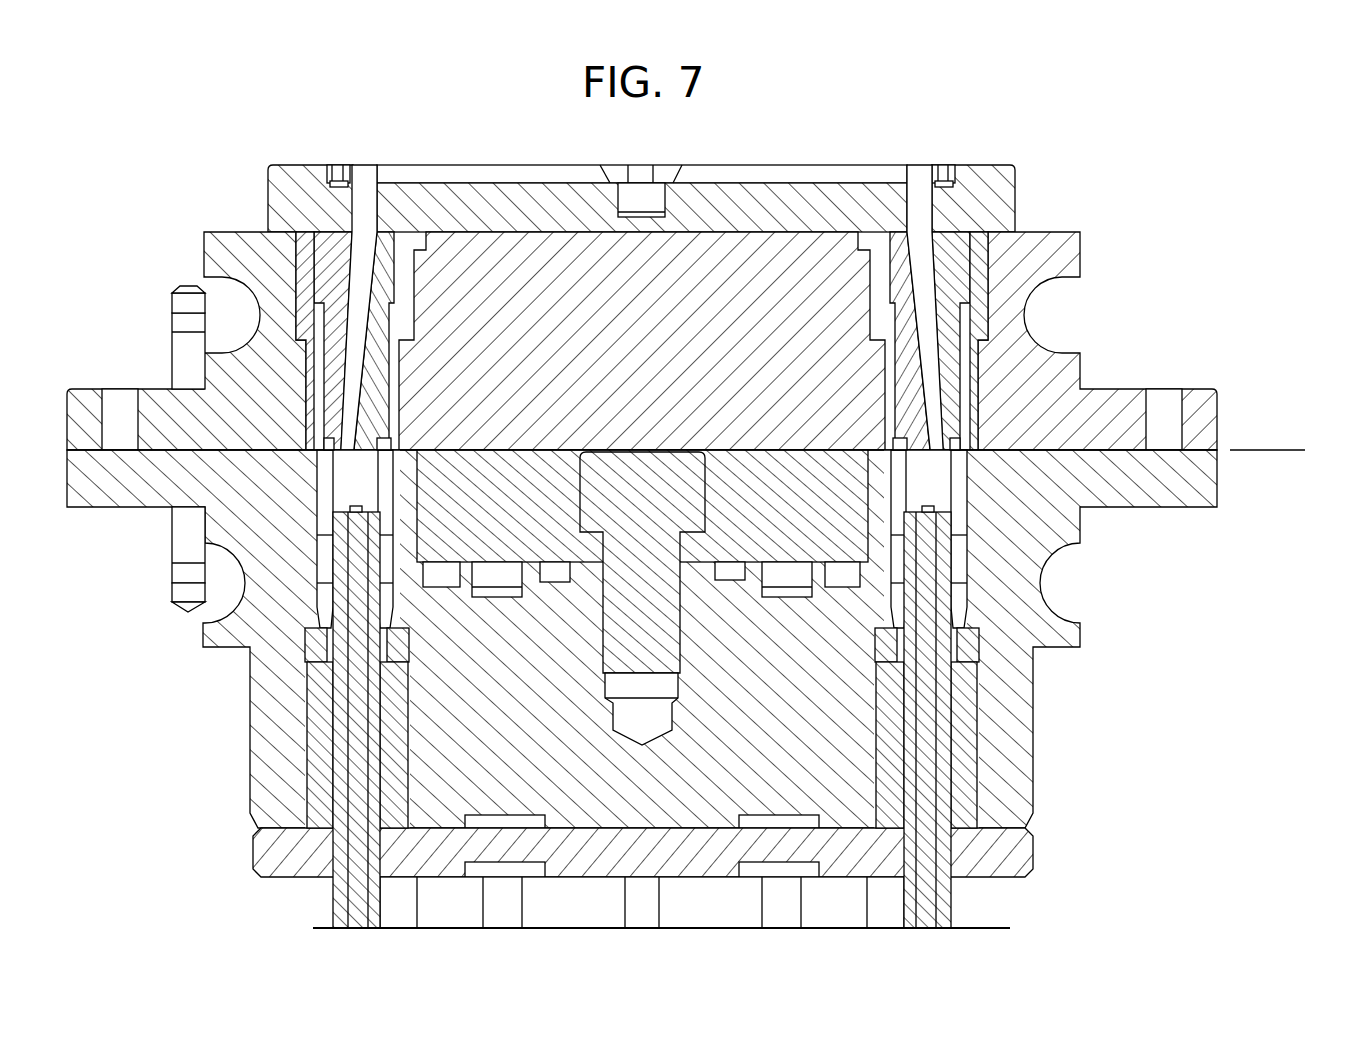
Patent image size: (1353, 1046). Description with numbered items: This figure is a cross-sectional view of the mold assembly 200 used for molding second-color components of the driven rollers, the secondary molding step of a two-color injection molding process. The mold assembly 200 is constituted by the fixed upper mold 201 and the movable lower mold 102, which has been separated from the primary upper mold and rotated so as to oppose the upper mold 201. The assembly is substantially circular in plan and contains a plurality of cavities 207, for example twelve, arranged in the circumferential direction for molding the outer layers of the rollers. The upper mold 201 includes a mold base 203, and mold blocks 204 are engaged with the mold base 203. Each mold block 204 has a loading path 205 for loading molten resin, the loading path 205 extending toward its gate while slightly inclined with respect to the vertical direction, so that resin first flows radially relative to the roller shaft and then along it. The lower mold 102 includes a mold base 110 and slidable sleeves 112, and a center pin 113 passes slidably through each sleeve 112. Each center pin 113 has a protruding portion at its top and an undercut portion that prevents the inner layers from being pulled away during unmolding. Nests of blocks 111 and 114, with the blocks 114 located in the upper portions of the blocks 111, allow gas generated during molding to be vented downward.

The mold assembly 200 is at (1156, 154).
The fixed upper mold 201 is at (1233, 153).
The movable lower mold 102 is at (1233, 455).
The mold base 203 is at (1050, 375).
The mold block 204 is at (332, 280).
The loading path 205 is at (362, 257).
The cavity 207 is at (325, 508).
The mold base 110 is at (1023, 572).
The block 111 is at (320, 735).
The slidable sleeve 112 is at (333, 902).
The center pin 113 is at (347, 685).
The block 114 is at (318, 642).